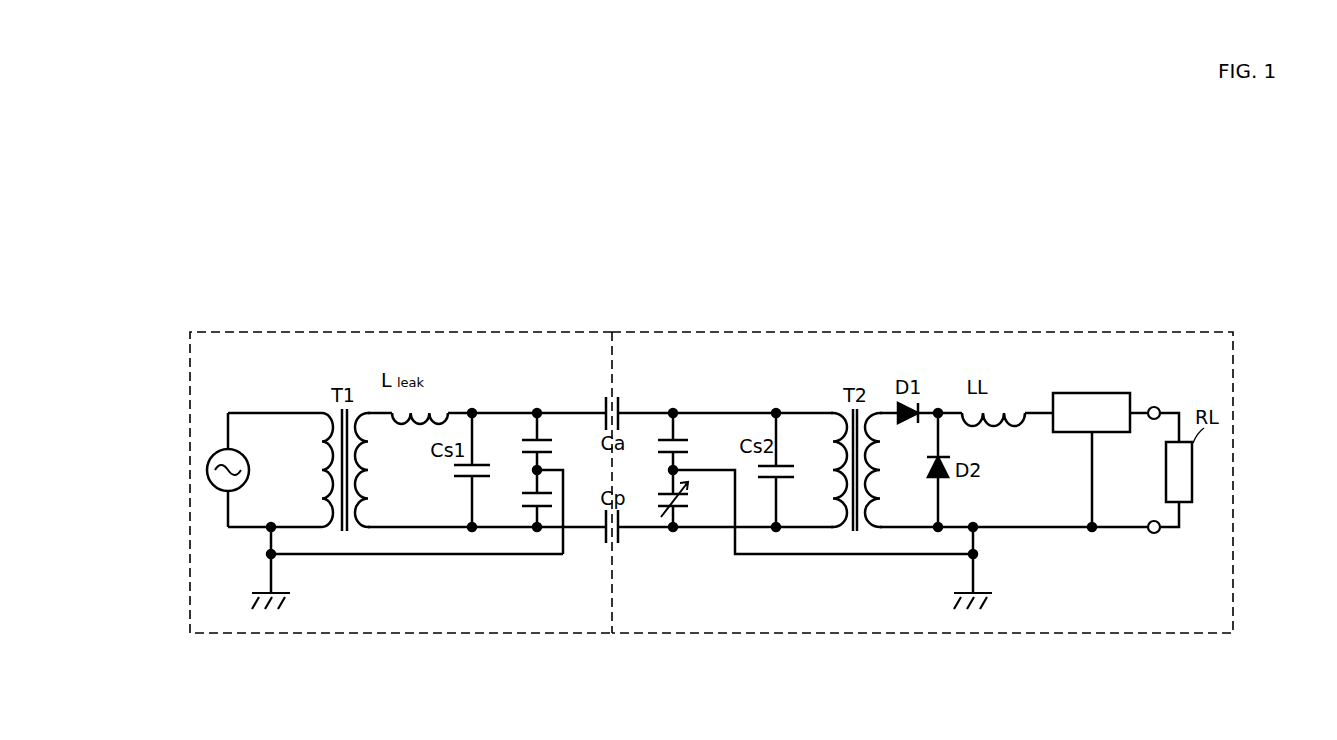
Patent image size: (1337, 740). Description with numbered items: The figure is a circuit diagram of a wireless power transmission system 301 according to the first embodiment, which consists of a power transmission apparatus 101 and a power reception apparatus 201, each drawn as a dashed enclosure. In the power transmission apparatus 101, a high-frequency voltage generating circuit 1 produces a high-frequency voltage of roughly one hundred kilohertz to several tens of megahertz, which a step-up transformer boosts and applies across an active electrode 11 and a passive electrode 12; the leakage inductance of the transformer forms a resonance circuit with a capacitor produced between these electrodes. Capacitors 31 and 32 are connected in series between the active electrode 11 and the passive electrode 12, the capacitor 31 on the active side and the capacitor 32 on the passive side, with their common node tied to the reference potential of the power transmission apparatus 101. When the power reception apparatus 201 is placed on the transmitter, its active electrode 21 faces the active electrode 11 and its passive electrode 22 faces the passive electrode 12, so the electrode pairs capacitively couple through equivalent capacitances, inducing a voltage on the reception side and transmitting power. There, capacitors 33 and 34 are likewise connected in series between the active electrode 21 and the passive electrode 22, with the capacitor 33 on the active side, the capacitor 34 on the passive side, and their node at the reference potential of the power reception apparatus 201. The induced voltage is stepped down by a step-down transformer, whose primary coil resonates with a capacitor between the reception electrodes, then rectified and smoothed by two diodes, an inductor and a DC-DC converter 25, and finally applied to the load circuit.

The high-frequency voltage generating circuit 1 is at (216, 456).
The active electrode 11 is at (606, 400).
The passive electrode 12 is at (606, 542).
The active electrode 21 is at (618, 400).
The passive electrode 22 is at (618, 542).
The DC-DC converter 25 is at (1066, 393).
The capacitor 31 is at (527, 441).
The capacitor 32 is at (527, 498).
The capacitor 33 is at (680, 441).
The capacitor 34 is at (687, 498).
The power transmission apparatus 101 is at (218, 332).
The power reception apparatus 201 is at (1205, 332).
The wireless power transmission system 301 is at (313, 218).